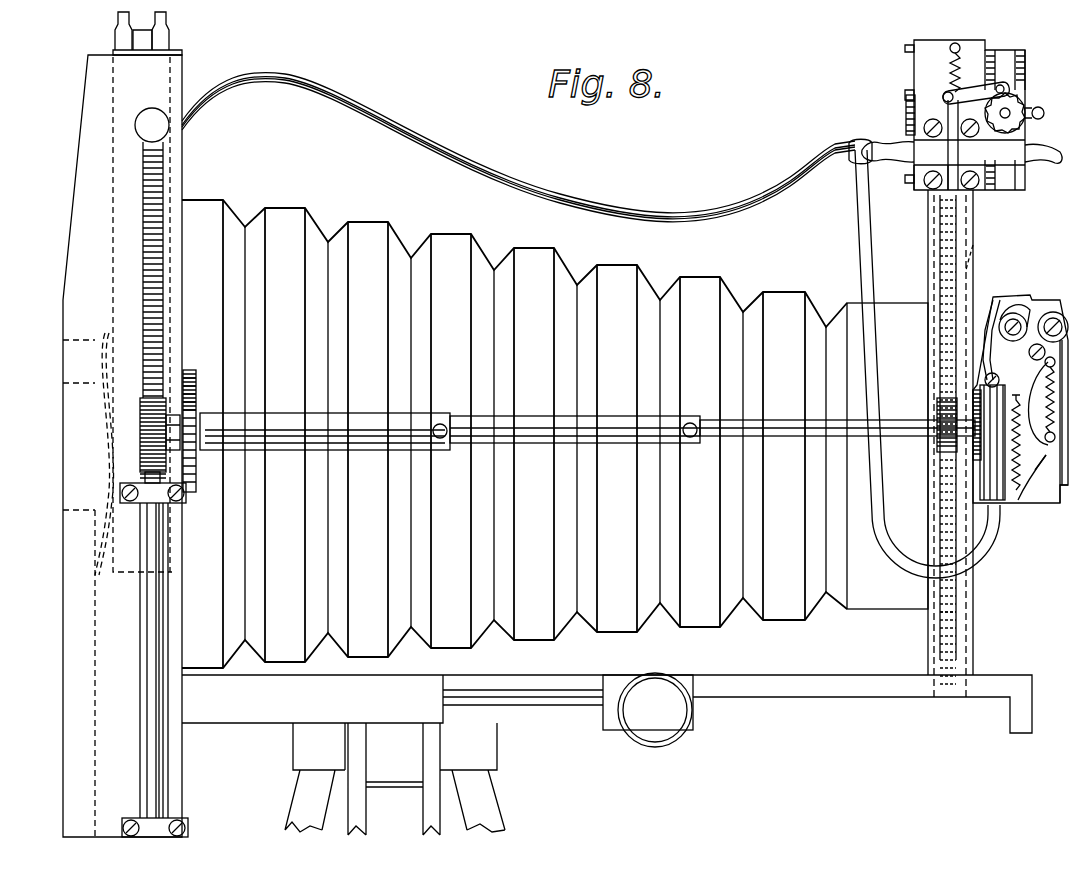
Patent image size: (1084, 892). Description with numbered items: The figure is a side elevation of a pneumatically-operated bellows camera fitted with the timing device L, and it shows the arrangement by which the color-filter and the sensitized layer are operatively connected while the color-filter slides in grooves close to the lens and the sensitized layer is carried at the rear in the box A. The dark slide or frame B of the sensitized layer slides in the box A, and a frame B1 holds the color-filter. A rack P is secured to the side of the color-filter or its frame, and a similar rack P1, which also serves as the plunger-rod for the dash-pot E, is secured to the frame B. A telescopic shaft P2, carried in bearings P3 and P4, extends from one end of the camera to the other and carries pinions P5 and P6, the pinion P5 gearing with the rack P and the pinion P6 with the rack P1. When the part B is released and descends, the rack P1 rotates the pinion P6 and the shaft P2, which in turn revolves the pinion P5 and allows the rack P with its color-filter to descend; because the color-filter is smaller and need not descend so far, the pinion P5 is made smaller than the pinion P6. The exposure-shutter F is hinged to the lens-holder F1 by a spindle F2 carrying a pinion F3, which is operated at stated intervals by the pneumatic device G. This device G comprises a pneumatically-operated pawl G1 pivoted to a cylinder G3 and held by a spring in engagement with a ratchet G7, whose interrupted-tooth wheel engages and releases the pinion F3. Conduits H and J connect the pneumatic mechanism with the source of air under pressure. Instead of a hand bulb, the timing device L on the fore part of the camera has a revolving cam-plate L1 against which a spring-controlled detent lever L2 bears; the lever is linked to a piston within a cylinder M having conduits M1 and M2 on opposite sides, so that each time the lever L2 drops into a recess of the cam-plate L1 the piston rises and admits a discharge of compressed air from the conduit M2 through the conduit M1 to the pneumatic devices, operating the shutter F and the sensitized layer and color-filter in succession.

The box A is at (85, 690).
The dark slide B is at (145, 43).
The rack P1 is at (155, 185).
The pinion P6 is at (150, 433).
The bearing P3 is at (190, 375).
The telescopic shaft P2 is at (340, 412).
The dash-pot E is at (156, 630).
The conduit H is at (440, 152).
The conduit J is at (910, 570).
The rack P is at (962, 262).
The timing device L is at (947, 115).
The cam-plate L1 is at (1003, 122).
The lever L2 is at (962, 95).
The cylinder M is at (905, 136).
The conduit M1 is at (918, 192).
The conduit M2 is at (1000, 162).
The frame B1 is at (1045, 122).
The pinion P5 is at (938, 412).
The bearing P4 is at (975, 462).
The pneumatic device G is at (1020, 399).
The pawl G1 is at (990, 355).
The cylinder G3 is at (998, 500).
The ratchet G7 is at (1020, 315).
The exposure-shutter F is at (1056, 500).
The lens-holder F1 is at (1045, 470).
The spindle F2 is at (1048, 310).
The pinion F3 is at (1056, 316).